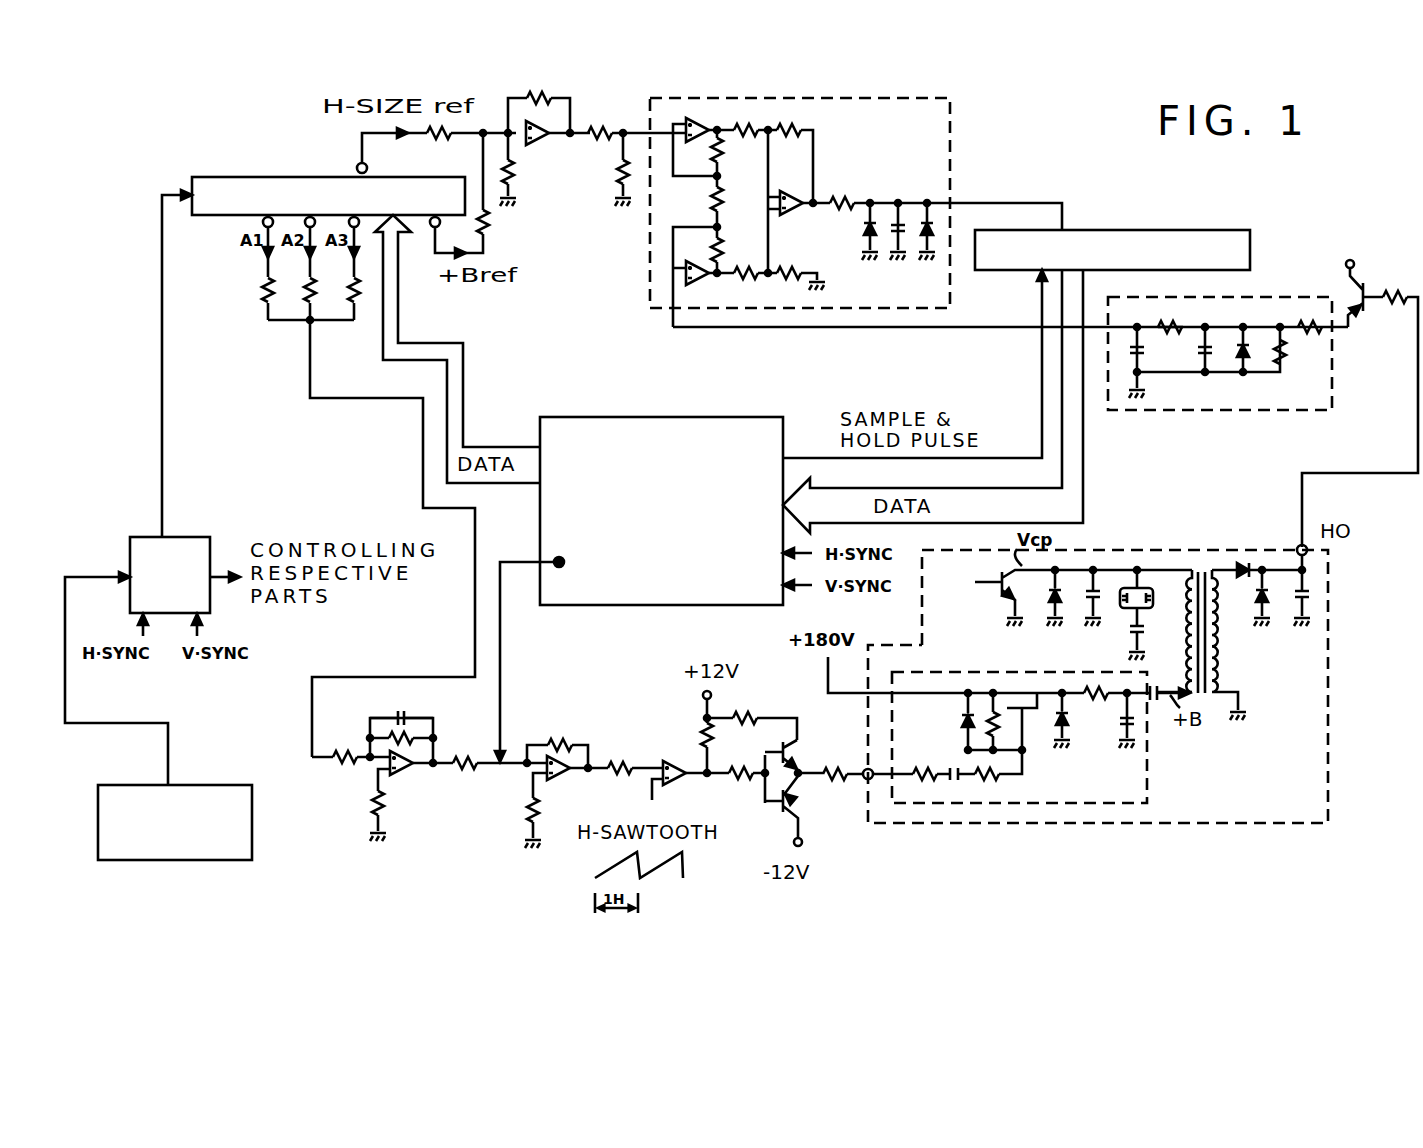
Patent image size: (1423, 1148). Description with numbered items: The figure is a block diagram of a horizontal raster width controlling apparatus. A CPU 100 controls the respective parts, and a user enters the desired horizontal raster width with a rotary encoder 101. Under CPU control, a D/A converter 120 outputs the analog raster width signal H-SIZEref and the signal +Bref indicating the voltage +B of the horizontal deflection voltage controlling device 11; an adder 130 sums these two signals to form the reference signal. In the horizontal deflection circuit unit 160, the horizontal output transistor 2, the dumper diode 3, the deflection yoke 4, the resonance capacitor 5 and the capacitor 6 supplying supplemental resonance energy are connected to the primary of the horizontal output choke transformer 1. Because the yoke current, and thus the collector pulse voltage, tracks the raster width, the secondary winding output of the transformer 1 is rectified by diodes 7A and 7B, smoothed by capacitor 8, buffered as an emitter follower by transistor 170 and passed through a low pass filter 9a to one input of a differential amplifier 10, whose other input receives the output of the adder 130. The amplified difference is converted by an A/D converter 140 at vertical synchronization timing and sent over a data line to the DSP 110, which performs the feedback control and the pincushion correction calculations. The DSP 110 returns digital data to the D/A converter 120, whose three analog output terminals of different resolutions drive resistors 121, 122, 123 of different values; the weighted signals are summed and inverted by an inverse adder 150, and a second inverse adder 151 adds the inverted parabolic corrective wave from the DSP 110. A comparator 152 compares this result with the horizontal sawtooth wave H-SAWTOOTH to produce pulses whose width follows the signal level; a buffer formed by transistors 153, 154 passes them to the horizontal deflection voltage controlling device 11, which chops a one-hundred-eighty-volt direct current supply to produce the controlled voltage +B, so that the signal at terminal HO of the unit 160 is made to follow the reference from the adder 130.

The D/A converter 120 is at (267, 177).
The resistor 121 is at (260, 293).
The resistor 122 is at (300, 297).
The resistor 123 is at (365, 297).
The adder 130 is at (543, 138).
The differential amplifier 10 is at (952, 160).
The A/D converter 140 is at (1140, 230).
The transistor 170 is at (1347, 292).
The low pass filter 9a is at (1215, 410).
The Digital Signal Processor (DSP) 110 is at (726, 417).
The Central Processing Unit (CPU) 100 is at (194, 537).
The rotary encoder 101 is at (212, 785).
The inverse adder 150 is at (402, 775).
The inverse adder 151 is at (558, 777).
The comparator 152 is at (678, 763).
The transistor 153 is at (798, 750).
The transistor 154 is at (798, 802).
The horizontal deflection circuit unit 160 is at (1328, 713).
The horizontal deflection voltage controlling device 11 is at (1150, 783).
The horizontal output transistor 2 is at (993, 575).
The dumper diode 3 is at (1047, 599).
The capacitor 5 is at (1088, 598).
The deflection yoke 4 is at (1143, 587).
The capacitor 6 is at (1150, 630).
The horizontal output choke transformer 1 is at (1205, 568).
The diode 7A is at (1243, 562).
The diode 7B is at (1257, 602).
The capacitor 8 is at (1310, 591).